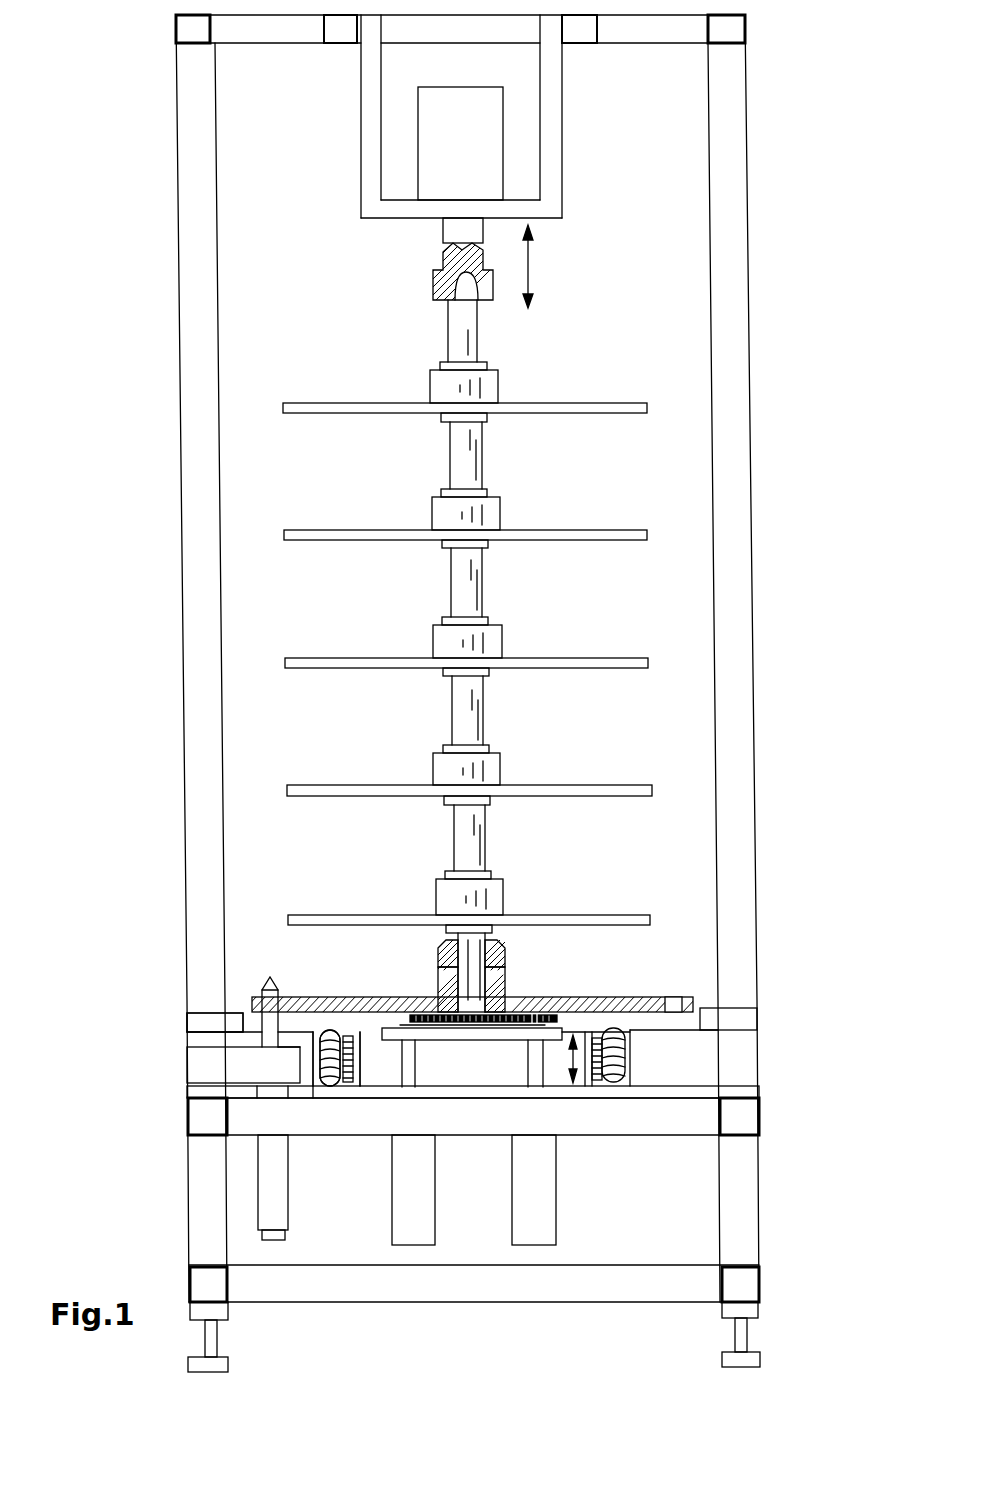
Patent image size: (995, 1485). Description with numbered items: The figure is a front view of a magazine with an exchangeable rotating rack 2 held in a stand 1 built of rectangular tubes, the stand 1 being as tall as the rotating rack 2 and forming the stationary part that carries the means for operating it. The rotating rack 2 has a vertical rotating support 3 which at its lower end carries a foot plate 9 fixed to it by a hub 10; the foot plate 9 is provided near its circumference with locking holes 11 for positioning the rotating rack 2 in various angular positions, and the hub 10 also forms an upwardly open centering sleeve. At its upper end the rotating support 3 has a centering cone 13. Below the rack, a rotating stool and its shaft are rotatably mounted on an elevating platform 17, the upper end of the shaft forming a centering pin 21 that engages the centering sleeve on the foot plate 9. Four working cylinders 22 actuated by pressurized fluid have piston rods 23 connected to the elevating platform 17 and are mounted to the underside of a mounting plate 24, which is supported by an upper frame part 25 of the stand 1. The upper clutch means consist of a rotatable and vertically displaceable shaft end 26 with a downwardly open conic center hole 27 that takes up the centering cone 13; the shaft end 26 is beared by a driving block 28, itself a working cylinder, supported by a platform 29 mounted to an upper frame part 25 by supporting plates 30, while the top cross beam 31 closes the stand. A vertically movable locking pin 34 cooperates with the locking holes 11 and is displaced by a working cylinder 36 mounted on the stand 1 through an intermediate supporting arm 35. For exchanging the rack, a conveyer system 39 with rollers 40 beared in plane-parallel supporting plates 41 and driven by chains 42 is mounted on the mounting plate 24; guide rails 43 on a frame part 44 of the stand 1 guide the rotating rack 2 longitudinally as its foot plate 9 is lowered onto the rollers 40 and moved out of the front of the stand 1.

The stand 1 is at (160, 343).
The rotating rack 2 is at (518, 463).
The rotating support 3 is at (467, 705).
The foot plate 9 is at (600, 997).
The hub 10 is at (497, 948).
The locking holes 11 is at (678, 997).
The centering cone 13 is at (458, 302).
The elevating platform 17 is at (397, 1032).
The centering pin 21 is at (508, 978).
The working cylinders 22 is at (418, 1200).
The piston rods 23 is at (537, 1072).
The mounting plate 24 is at (627, 1093).
The upper frame part 25 is at (682, 1118).
The shaft end 26 is at (435, 278).
The conic center hole 27 is at (437, 292).
The driving block 28 is at (493, 143).
The platform 29 is at (550, 210).
The supporting plates 30 is at (362, 78).
The top beam 31 is at (337, 40).
The locking pin 34 is at (268, 978).
The supporting arm 35 is at (210, 1075).
The working cylinder 36 is at (272, 1183).
The conveyer system 39 is at (643, 1058).
The rollers 40 is at (332, 1082).
The supporting plates 41 is at (302, 1090).
The chains 42 is at (352, 1040).
The guide rails 43 is at (228, 1018).
The frame part 44 is at (197, 1023).